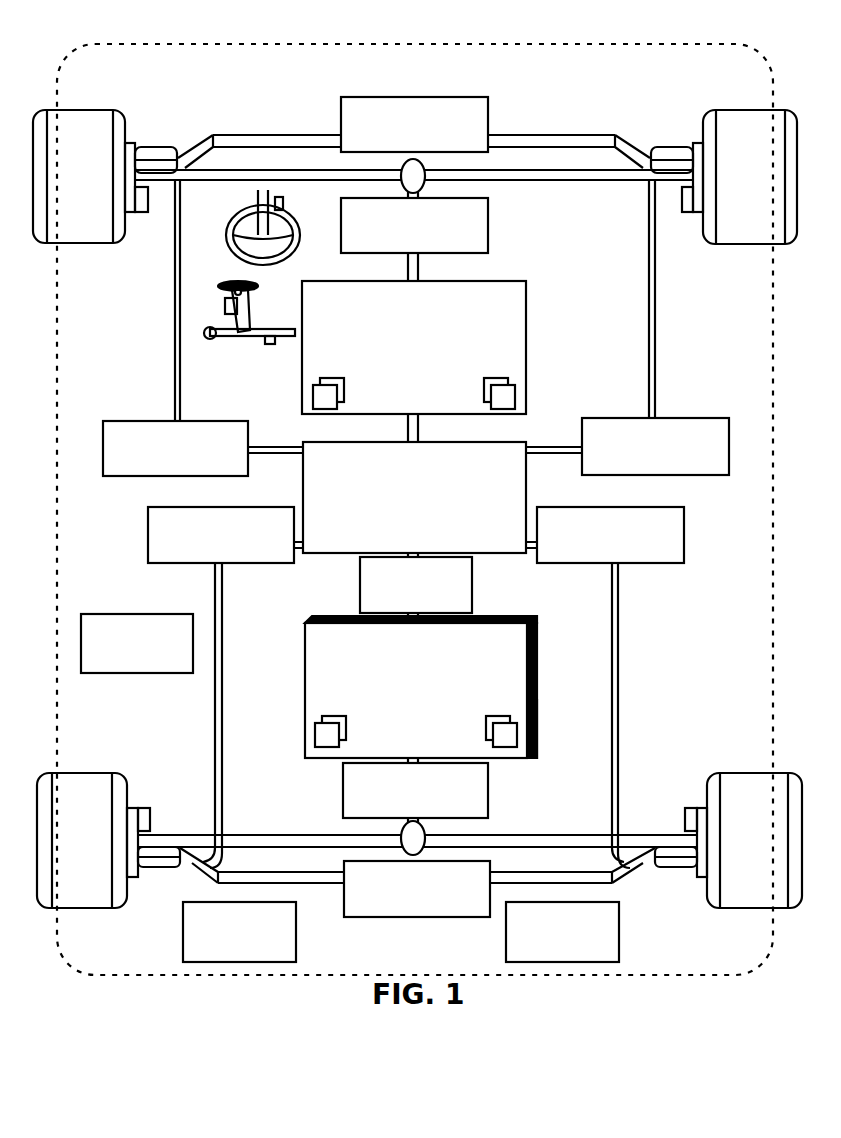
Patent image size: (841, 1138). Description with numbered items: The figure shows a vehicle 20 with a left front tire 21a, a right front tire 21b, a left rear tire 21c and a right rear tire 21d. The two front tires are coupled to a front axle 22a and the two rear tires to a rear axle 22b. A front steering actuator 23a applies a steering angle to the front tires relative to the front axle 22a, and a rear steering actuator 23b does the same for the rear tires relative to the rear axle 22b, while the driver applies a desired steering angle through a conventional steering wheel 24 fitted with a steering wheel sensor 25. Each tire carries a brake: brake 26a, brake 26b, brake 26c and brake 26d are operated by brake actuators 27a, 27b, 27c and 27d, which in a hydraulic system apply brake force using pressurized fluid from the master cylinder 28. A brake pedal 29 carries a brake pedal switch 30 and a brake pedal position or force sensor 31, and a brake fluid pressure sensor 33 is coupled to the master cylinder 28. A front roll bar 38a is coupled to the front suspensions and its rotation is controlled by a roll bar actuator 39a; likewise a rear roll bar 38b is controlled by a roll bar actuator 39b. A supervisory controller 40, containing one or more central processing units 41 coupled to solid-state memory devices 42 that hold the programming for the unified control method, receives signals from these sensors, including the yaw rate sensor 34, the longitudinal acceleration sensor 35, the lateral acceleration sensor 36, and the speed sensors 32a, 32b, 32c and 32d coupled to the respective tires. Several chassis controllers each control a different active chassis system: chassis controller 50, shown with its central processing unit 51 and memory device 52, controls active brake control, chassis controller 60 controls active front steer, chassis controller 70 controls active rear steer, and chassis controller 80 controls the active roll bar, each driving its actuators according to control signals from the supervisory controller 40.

The vehicle 20 is at (418, 44).
The left front tire 21a is at (85, 110).
The right front tire 21b is at (740, 110).
The left rear tire 21c is at (103, 758).
The right rear tire 21d is at (742, 773).
The front axle 22a is at (540, 180).
The rear axle 22b is at (520, 835).
The front steering actuator 23a is at (397, 250).
The rear steering actuator 23b is at (398, 815).
The steering wheel 24 is at (228, 238).
The steering wheel sensor 25 is at (283, 205).
The brake 26a is at (140, 147).
The brake 26b is at (688, 147).
The brake 26c is at (140, 878).
The brake 26d is at (693, 878).
The brake actuator 27a is at (158, 473).
The brake actuator 27b is at (638, 471).
The brake actuator 27c is at (204, 559).
The brake actuator 27d is at (593, 559).
The master cylinder 28 is at (402, 534).
The brake pedal 29 is at (255, 322).
The brake pedal switch 30 is at (258, 338).
The brake pedal position or force sensor 31 is at (225, 302).
The speed sensor 32a is at (140, 213).
The speed sensor 32b is at (690, 213).
The speed sensor 32c is at (146, 807).
The speed sensor 32d is at (690, 807).
The brake fluid pressure sensor 33 is at (404, 609).
The yaw rate sensor 34 is at (125, 667).
The sensor 35 is at (227, 955).
The sensor 36 is at (550, 955).
The front roll bar 38a is at (578, 134).
The rear roll bar 38b is at (300, 883).
The roll bar actuator 39a is at (397, 149).
The roll bar actuator 39b is at (400, 913).
The supervisory controller 40 is at (402, 371).
The central processing unit 41 is at (344, 396).
The solid-state memory device 42 is at (484, 396).
The chassis controller 50 is at (442, 669).
The central processing unit 51 is at (346, 733).
The solid-state memory device 52 is at (486, 733).
The chassis controller 60 is at (537, 708).
The chassis controller 70 is at (537, 660).
The chassis controller 80 is at (537, 619).